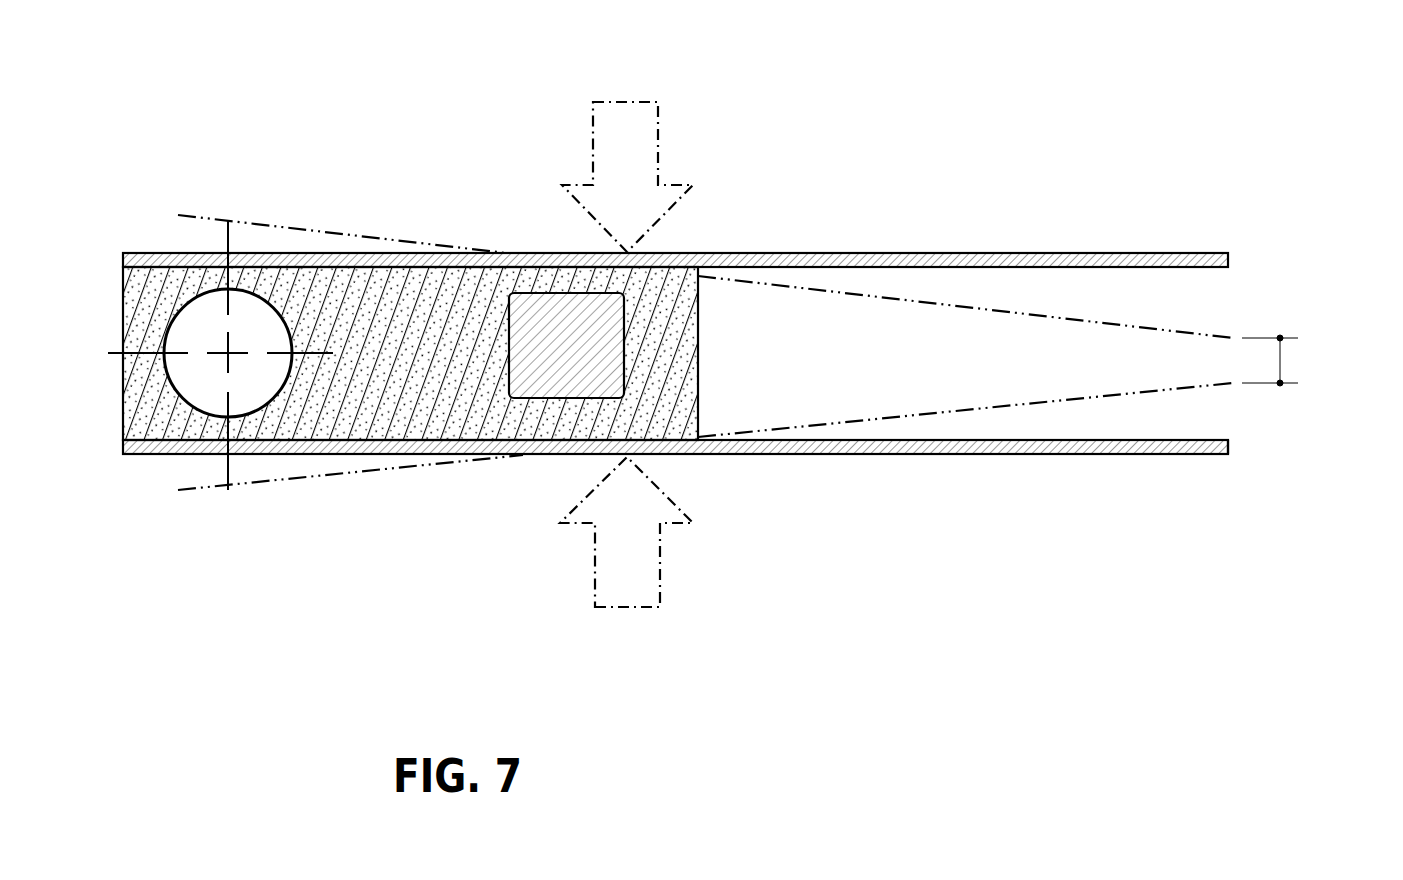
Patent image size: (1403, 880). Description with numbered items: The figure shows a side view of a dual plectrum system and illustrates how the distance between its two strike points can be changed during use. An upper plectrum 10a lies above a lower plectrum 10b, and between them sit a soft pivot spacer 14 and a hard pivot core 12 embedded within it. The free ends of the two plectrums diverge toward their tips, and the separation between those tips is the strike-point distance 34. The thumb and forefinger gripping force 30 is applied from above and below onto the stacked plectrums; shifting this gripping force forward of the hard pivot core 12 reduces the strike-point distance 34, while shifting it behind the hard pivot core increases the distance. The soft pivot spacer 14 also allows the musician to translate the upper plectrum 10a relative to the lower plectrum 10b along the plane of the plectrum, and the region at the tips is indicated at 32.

The upper plectrum 10a is at (1007, 255).
The lower plectrum 10b is at (962, 448).
The hard pivot core 12 is at (537, 343).
The soft pivot spacer 14 is at (390, 408).
The thumb and forefinger gripping force 30 is at (645, 123).
The plate end 32 is at (1230, 445).
The strike-point distance 34 is at (1285, 360).